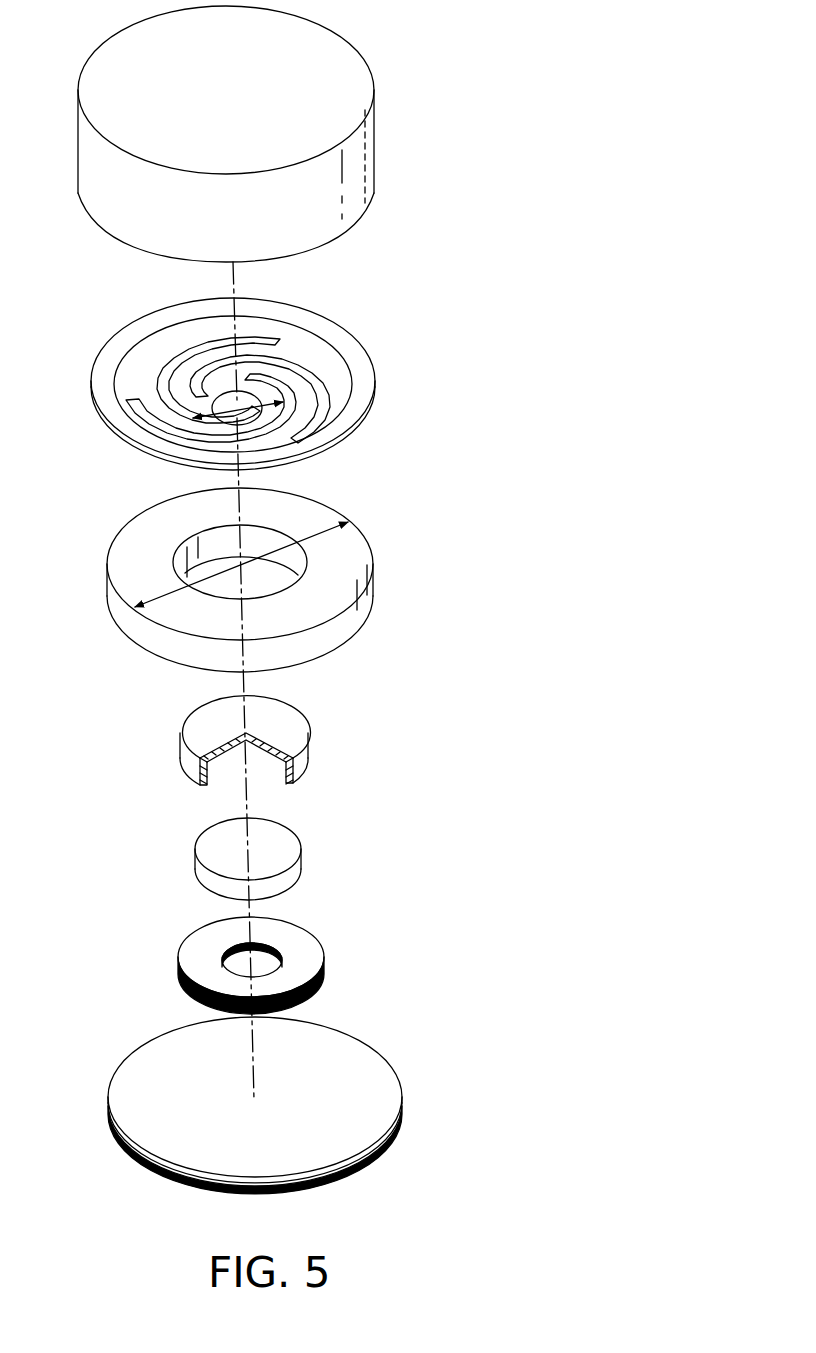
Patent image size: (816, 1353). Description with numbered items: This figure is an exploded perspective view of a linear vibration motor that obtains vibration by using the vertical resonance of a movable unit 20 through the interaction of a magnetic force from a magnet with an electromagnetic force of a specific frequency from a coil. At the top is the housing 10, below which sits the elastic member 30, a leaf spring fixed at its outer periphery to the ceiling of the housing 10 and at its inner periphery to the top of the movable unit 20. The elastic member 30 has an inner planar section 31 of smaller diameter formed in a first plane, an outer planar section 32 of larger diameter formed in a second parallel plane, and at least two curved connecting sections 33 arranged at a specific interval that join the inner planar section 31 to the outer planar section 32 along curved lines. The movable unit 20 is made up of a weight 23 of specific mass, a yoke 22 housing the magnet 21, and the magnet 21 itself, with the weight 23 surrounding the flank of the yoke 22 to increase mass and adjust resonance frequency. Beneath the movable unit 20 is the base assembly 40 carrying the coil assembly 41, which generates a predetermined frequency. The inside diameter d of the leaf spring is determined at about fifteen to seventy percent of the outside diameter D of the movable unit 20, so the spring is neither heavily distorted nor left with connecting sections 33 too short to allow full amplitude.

The housing 10 is at (363, 150).
The movable unit 20 is at (330, 790).
The magnet 21 is at (290, 859).
The yoke 22 is at (295, 738).
The weight 23 is at (277, 598).
The elastic member 30 is at (244, 373).
The inner planar section 31 is at (193, 397).
The outer planar section 32 is at (360, 352).
The curved connecting sections 33 is at (195, 350).
The base assembly 40 is at (382, 1082).
The coil assembly 41 is at (313, 953).
The inside diameter of the leaf spring d is at (213, 402).
The outside diameter of the movable unit D is at (352, 530).